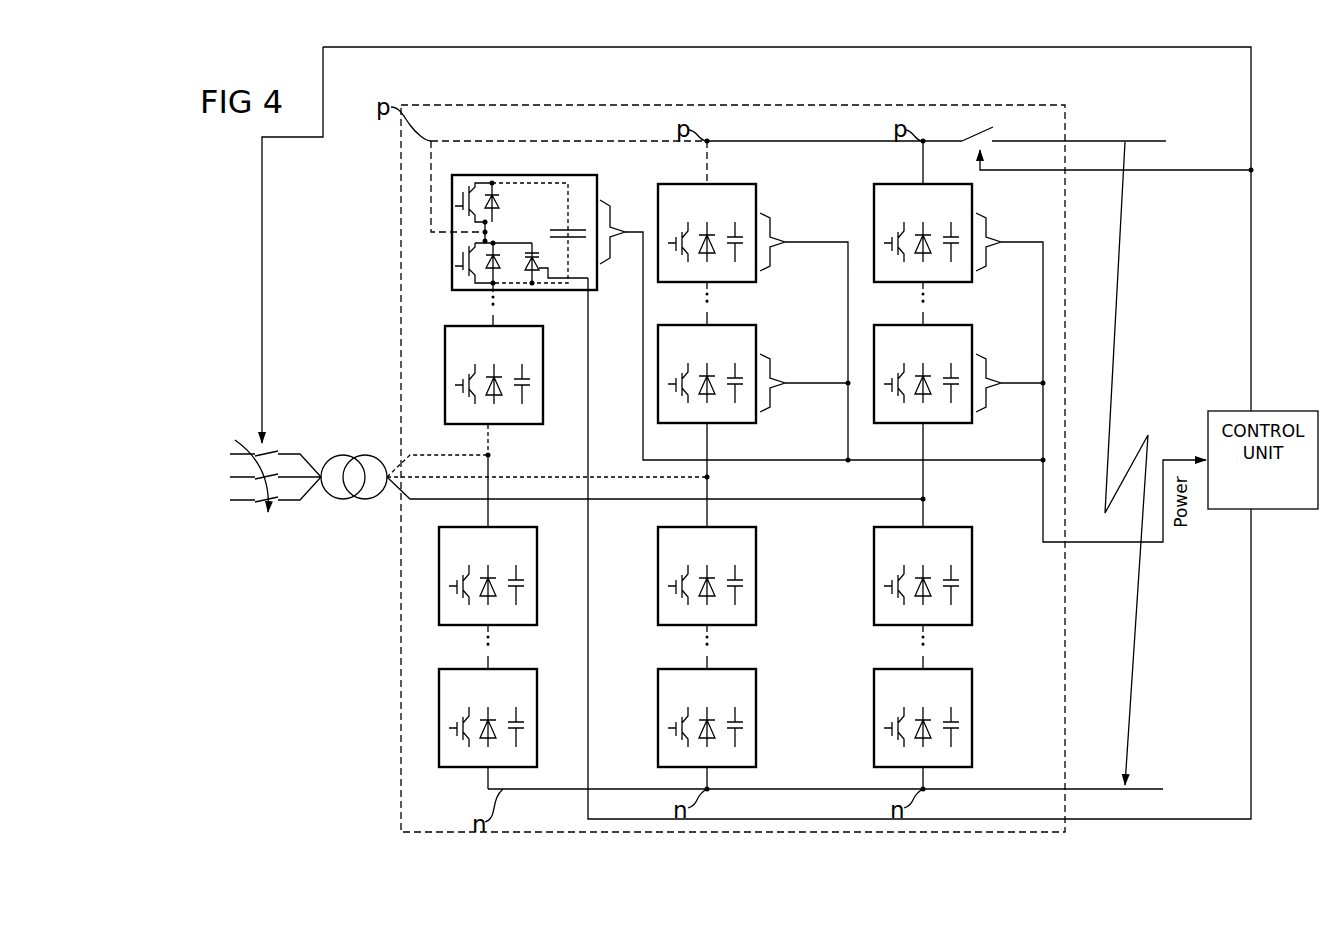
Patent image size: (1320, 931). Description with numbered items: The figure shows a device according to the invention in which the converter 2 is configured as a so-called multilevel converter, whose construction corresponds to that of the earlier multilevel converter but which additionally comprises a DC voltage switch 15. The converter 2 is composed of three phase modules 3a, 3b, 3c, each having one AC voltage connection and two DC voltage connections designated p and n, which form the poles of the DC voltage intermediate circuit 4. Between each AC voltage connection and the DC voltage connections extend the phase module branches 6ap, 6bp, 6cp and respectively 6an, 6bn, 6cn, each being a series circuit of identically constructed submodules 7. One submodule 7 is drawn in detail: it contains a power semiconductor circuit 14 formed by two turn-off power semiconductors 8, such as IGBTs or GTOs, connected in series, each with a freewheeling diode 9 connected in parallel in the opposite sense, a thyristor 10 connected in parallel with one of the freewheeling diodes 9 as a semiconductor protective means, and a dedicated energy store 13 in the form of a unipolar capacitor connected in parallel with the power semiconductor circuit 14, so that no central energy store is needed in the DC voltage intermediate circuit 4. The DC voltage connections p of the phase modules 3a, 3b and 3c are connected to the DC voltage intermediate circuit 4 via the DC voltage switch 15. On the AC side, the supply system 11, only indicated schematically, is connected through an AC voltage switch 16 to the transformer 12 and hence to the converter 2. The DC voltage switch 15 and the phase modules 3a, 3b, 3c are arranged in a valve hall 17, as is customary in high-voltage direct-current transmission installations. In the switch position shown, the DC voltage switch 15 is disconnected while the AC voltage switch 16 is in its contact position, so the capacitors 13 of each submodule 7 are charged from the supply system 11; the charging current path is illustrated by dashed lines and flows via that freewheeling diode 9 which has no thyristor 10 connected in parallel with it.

The converter 2 is at (655, 100).
The phase module 3a is at (507, 100).
The phase module 3b is at (721, 100).
The phase module 3c is at (935, 100).
The DC voltage intermediate circuit 4 is at (1161, 133).
The phase module branch 6ap is at (418, 330).
The phase module branch 6an is at (418, 668).
The phase module branch 6bp is at (765, 422).
The phase module branch 6bn is at (772, 600).
The phase module branch 6cp is at (956, 320).
The phase module branch 6cn is at (982, 620).
The submodule 7 is at (597, 207).
The turn-off power semiconductor 8 is at (455, 200).
The freewheeling diode 9 is at (505, 205).
The thyristor 10 is at (549, 260).
The supply system 11 is at (215, 433).
The transformer 12 is at (349, 515).
The energy store 13 is at (587, 230).
The power semiconductor circuit 14 is at (380, 195).
The DC voltage switch 15 is at (963, 117).
The AC voltage switch 16 is at (280, 515).
The valve hall 17 is at (401, 808).